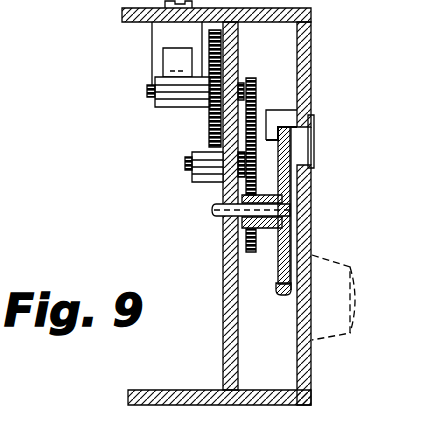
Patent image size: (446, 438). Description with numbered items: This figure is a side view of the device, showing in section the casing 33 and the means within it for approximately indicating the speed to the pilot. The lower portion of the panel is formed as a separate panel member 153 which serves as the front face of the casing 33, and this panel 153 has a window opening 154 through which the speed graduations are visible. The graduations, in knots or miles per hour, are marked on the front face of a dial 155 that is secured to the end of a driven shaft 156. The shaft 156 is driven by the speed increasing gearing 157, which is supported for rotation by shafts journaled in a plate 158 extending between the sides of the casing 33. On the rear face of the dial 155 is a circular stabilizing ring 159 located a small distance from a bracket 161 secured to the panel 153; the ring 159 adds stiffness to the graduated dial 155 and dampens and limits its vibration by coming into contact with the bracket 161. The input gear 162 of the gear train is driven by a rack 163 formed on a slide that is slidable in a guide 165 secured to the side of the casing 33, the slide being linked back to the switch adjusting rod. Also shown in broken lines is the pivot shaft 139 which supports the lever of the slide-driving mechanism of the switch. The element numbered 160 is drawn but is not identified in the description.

The casing 33 is at (143, 386).
The pivot shaft 139 is at (346, 283).
The panel member 153 is at (306, 226).
The window opening 154 is at (304, 143).
The dial 155 is at (282, 296).
The driven shaft 156 is at (213, 209).
The speed increasing gearing 157 is at (206, 142).
The plate 158 is at (222, 307).
The stabilizing ring 159 is at (274, 280).
The gear 160 is at (252, 78).
The bracket 161 is at (272, 111).
The input gear 162 is at (157, 107).
The rack 163 is at (168, 63).
The guide 165 is at (152, 41).